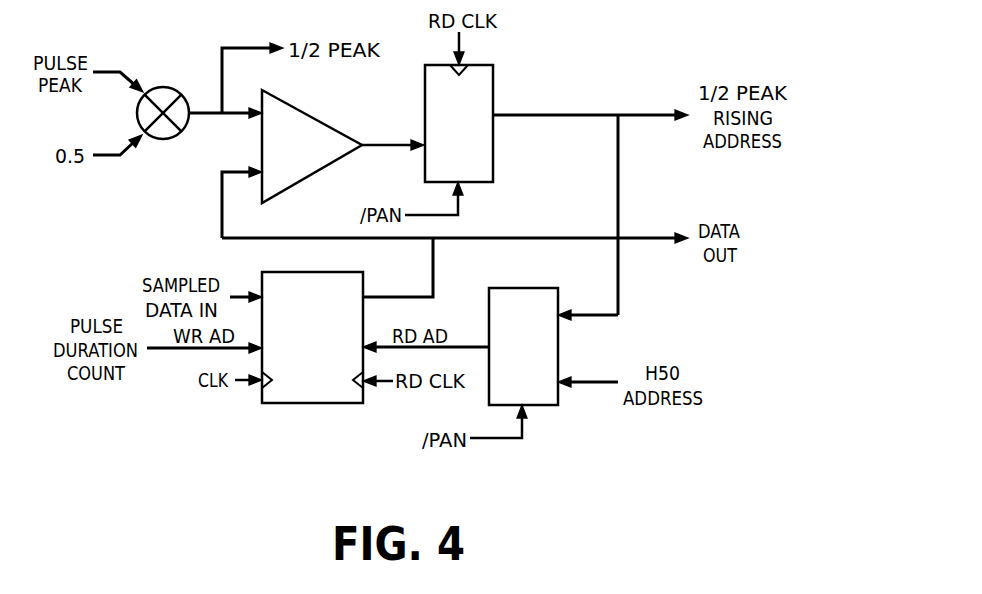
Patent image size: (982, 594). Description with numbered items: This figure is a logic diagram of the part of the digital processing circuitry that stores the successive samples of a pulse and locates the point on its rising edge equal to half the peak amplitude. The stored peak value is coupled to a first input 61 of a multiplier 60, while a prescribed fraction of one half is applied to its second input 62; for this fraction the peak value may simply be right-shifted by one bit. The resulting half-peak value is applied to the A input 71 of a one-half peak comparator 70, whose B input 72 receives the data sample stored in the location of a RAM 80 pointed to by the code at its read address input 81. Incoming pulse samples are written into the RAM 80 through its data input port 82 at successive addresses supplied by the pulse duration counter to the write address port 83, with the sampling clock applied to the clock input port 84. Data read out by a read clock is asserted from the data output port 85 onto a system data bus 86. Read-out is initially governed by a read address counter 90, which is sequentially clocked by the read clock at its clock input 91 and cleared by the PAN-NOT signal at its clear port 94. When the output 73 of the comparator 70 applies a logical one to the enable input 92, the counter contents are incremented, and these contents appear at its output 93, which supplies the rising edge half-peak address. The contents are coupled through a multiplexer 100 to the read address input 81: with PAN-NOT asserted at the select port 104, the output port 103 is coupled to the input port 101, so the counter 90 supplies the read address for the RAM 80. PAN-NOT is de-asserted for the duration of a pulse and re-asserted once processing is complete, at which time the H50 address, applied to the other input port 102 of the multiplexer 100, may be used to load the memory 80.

The multiplier 60 is at (163, 88).
The first input of multiplier 61 is at (145, 92).
The second input of multiplier 62 is at (143, 135).
The one-half peak comparator 70 is at (315, 115).
The A input of one-half peak comparator 71 is at (260, 108).
The B input of one-half peak comparator 72 is at (262, 175).
The output of one-half peak comparator 73 is at (363, 142).
The RAM 80 is at (300, 272).
The read address input 81 is at (367, 343).
The data input port 82 is at (258, 288).
The write address port 83 is at (258, 353).
The clock input port 84 is at (250, 398).
The data output port 85 is at (367, 295).
The system data bus 86 is at (563, 238).
The read address counter 90 is at (485, 68).
The clock input of read address counter 91 is at (453, 63).
The enable input of read address counter 92 is at (422, 155).
The output of read address counter 93 is at (497, 110).
The clear port of read address counter 94 is at (465, 183).
The multiplexer 100 is at (492, 288).
The input port of multiplexer 101 is at (563, 312).
The input port of multiplexer 102 is at (563, 380).
The output port of multiplexer 103 is at (560, 333).
The select port of multiplexer 104 is at (543, 410).